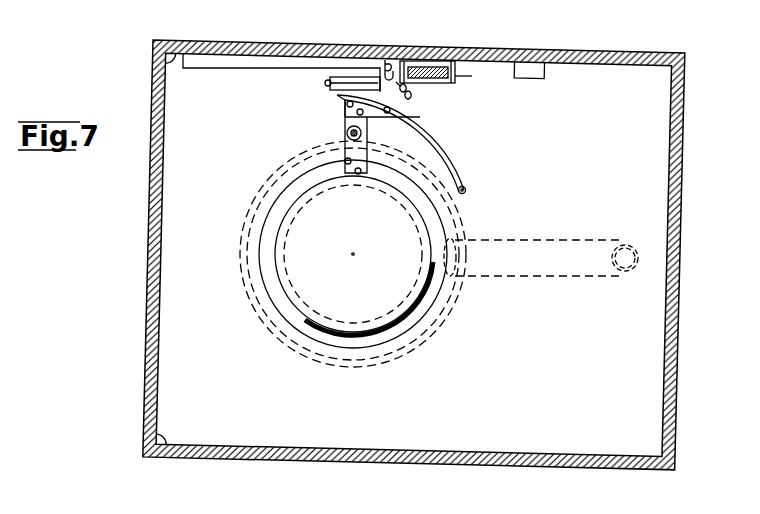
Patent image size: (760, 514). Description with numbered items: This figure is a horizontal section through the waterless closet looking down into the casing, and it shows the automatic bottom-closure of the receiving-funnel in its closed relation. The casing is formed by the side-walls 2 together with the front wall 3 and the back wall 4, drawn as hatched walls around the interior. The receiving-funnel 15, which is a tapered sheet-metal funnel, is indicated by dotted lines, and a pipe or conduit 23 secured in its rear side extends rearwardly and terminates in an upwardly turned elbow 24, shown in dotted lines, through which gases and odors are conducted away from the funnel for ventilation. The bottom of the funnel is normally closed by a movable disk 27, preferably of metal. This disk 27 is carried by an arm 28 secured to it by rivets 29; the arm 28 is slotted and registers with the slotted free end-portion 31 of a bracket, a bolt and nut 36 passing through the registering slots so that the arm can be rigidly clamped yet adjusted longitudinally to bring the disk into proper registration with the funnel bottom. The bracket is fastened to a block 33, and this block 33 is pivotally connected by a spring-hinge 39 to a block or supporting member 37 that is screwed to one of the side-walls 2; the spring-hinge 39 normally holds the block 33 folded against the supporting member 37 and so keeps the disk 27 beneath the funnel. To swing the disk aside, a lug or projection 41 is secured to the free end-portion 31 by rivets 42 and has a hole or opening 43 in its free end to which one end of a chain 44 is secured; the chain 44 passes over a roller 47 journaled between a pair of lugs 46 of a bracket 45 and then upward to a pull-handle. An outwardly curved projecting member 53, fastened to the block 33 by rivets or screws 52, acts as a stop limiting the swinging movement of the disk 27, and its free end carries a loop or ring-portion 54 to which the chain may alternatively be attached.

The side-walls 2 is at (603, 57).
The front wall 3 is at (150, 198).
The back wall 4 is at (686, 155).
The receiving-funnel 15 is at (250, 267).
The pipe or conduit 23 is at (562, 268).
The upwardly turned member or elbow 24 is at (633, 246).
The movable disk 27 is at (400, 228).
The arm 28 is at (368, 158).
The rivets 29 is at (348, 164).
The free end-portion of bracket 31 is at (361, 136).
The block 33 is at (340, 99).
The bolt and nut 36 is at (346, 134).
The block or supporting member 37 is at (229, 62).
The spring-hinge 39 is at (388, 62).
The lug or projection 41 is at (413, 125).
The rivets 42 is at (345, 112).
The hole or opening 43 is at (420, 114).
The chain 44 is at (411, 96).
The bracket 45 is at (450, 64).
The lugs or projections 46 is at (462, 70).
The roller 47 is at (437, 69).
The rivets, screws or the like 52 is at (326, 82).
The outwardly curved projecting member 53 is at (456, 162).
The loop or ring-portion 54 is at (467, 188).